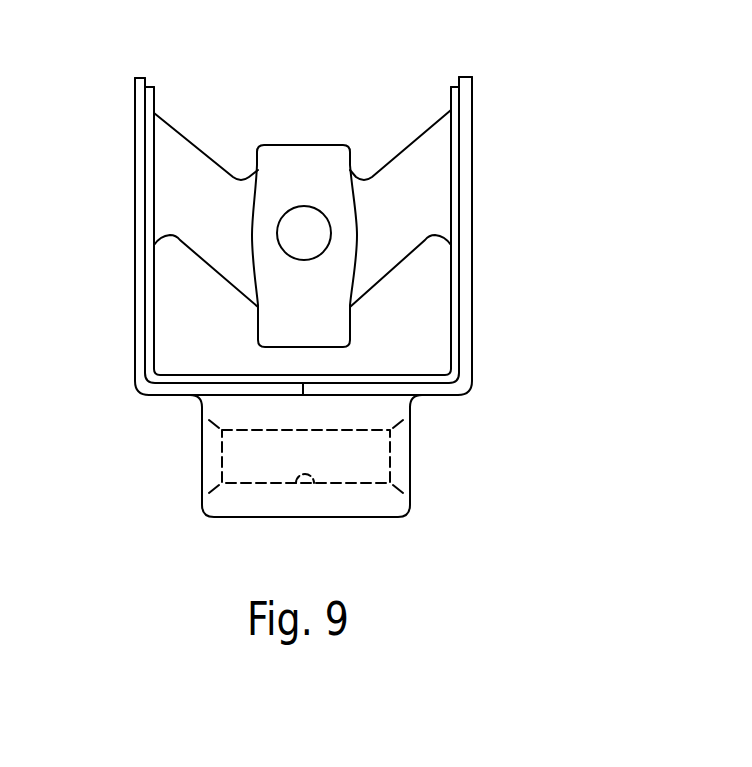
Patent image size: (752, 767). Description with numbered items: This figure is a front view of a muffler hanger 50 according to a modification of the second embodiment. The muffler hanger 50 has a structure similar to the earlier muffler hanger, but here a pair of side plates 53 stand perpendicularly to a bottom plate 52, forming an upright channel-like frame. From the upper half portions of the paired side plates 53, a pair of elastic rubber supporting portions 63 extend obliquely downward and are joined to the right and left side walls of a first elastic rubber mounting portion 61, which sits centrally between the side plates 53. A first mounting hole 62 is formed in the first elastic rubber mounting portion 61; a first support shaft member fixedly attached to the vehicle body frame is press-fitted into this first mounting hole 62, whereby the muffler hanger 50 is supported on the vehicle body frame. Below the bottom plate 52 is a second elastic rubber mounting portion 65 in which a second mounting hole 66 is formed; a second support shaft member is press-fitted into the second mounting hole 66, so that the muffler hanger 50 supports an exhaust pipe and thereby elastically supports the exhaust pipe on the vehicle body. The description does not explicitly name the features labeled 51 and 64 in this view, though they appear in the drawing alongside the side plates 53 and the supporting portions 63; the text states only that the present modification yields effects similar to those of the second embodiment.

The muffler hanger 50 is at (400, 57).
The side wall 51 is at (462, 78).
The bottom plate 52 is at (418, 396).
The side plates 53 is at (134, 235).
The first elastic rubber mounting portion 61 is at (314, 145).
The first mounting hole 62 is at (289, 208).
The elastic rubber supporting portions 63 is at (197, 147).
The lower arm 64 is at (155, 305).
The second elastic rubber mounting portion 65 is at (383, 517).
The second mounting hole 66 is at (313, 486).